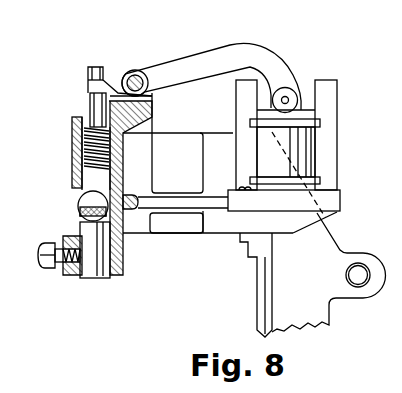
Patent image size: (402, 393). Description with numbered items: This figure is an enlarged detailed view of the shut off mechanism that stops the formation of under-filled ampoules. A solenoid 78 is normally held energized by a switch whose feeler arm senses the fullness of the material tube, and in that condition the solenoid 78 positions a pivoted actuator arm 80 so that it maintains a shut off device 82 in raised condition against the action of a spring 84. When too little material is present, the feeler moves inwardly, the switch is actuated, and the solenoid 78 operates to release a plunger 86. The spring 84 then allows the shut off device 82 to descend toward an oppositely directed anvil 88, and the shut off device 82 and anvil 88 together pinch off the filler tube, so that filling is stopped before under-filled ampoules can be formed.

The solenoid 78 is at (305, 148).
The pivoted actuator arm 80 is at (208, 57).
The shut off device 82 is at (82, 196).
The spring 84 is at (83, 147).
The plunger 86 is at (92, 113).
The anvil 88 is at (82, 223).